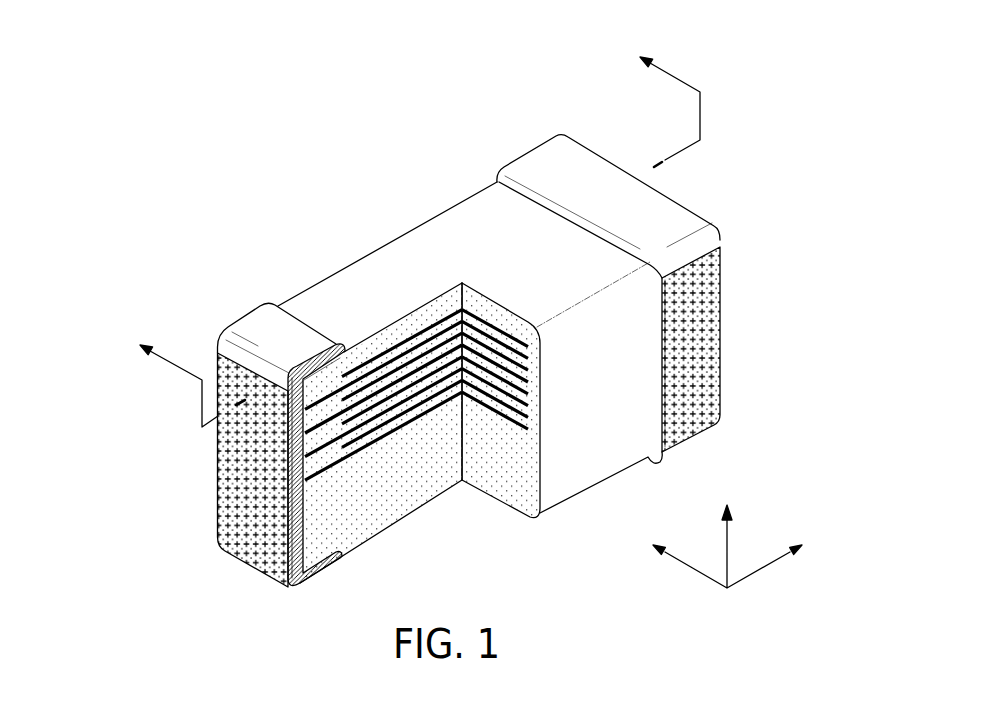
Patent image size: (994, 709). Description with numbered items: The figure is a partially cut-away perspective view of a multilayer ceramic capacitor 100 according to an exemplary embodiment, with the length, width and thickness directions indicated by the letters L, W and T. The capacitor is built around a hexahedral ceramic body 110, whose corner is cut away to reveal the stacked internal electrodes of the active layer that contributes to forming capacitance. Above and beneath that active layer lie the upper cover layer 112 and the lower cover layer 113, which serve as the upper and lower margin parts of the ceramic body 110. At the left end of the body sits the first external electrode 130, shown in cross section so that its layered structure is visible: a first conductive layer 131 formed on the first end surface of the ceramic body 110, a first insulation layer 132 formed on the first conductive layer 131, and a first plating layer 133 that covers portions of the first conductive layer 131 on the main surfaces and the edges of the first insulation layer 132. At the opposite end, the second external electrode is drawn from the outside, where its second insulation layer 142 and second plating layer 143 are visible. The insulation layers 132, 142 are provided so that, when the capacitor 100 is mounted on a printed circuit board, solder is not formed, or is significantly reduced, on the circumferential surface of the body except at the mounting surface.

The multilayer ceramic capacitor 100 is at (320, 128).
The ceramic body 110 is at (291, 274).
The upper cover layer 112 is at (400, 333).
The lower cover layer 113 is at (393, 490).
The first external electrode 130 is at (135, 435).
The first conductive layer 131 is at (287, 457).
The first insulation layer 132 is at (288, 493).
The first plating layer 133 is at (290, 587).
The second insulation layer 142 is at (703, 337).
The second plating layer 143 is at (652, 203).